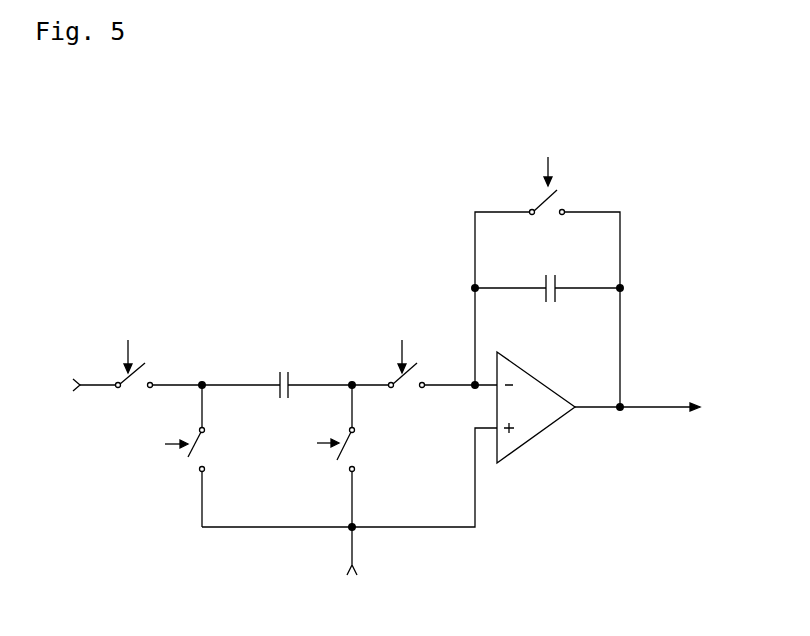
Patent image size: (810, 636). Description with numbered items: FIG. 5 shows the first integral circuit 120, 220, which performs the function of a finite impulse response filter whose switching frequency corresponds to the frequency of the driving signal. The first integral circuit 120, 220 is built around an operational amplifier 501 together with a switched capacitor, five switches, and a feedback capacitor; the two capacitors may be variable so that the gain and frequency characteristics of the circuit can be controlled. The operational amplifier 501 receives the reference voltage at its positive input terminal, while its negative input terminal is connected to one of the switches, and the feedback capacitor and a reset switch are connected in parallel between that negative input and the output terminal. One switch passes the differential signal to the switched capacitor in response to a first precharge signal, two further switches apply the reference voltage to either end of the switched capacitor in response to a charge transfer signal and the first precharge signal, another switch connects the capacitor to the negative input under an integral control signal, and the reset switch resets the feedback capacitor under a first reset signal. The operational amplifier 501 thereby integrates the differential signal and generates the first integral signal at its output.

The first integral circuit 120 is at (407, 349).
The first integral circuit 220 is at (407, 349).
The operational amplifier 501 is at (535, 433).